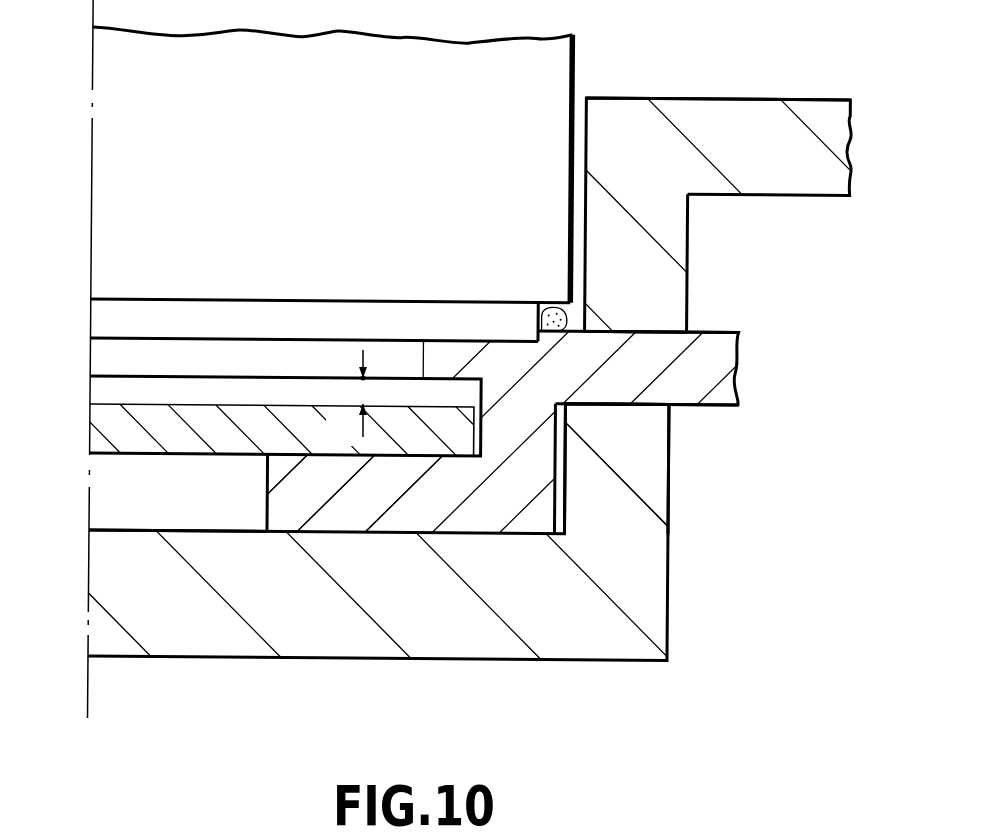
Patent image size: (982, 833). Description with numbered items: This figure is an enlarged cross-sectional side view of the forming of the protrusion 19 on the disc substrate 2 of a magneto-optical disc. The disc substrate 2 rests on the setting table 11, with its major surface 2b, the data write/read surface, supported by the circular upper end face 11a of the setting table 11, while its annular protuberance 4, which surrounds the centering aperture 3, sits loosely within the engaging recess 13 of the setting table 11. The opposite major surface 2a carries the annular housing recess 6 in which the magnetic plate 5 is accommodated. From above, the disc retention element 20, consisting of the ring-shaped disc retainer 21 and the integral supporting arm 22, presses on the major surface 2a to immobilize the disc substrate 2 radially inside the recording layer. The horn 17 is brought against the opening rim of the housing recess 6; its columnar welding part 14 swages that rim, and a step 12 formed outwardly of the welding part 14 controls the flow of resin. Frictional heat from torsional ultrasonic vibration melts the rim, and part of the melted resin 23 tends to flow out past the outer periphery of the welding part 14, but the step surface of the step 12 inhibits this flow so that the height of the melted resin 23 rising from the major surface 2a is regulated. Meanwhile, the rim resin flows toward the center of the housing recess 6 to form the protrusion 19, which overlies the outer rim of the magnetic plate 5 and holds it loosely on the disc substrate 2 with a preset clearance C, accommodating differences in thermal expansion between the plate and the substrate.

The disc substrate 2 is at (713, 364).
The major surface 2a is at (717, 333).
The other major surface 2b is at (704, 403).
The centering aperture 3 is at (270, 480).
The annular protuberance 4 is at (520, 490).
The magnetic plate 5 is at (102, 417).
The housing recess 6 is at (423, 457).
The setting table 11 is at (638, 563).
The circular upper end face 11a is at (616, 402).
The step 12 is at (584, 328).
The engaging recess 13 is at (174, 532).
The welding part 14 is at (203, 318).
The horn 17 is at (552, 80).
The protrusion 19 is at (455, 358).
The disc retention element 20 is at (698, 79).
The disc retainer 21 is at (653, 315).
The supporting arm 22 is at (762, 178).
The melted resin 23 is at (560, 313).
The clearance C is at (346, 401).